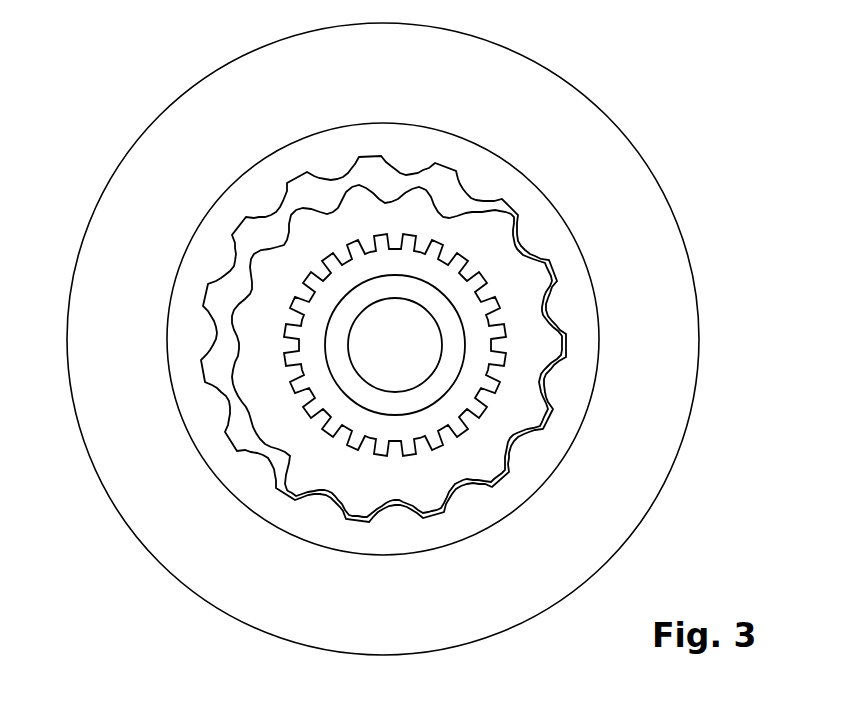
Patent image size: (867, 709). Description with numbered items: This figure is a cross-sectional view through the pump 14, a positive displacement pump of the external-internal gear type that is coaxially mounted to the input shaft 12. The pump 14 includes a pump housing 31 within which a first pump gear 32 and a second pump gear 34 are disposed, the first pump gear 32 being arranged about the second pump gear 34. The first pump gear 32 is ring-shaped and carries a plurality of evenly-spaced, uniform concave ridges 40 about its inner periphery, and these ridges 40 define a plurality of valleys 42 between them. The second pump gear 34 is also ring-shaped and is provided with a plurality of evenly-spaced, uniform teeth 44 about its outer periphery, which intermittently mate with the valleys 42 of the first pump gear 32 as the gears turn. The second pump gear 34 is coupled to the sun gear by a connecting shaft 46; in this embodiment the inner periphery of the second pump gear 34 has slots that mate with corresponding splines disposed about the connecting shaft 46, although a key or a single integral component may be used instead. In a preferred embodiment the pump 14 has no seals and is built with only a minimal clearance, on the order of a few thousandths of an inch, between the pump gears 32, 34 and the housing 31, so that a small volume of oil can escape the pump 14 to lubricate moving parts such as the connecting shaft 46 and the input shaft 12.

The pump 14 is at (652, 82).
The input shaft 12 is at (413, 357).
The pump housing 31 is at (493, 590).
The first pump gear 32 is at (217, 250).
The second pump gear 34 is at (485, 230).
The concave ridges 40 is at (233, 381).
The valleys 42 is at (238, 428).
The teeth 44 is at (548, 272).
The connecting shaft 46 is at (363, 420).